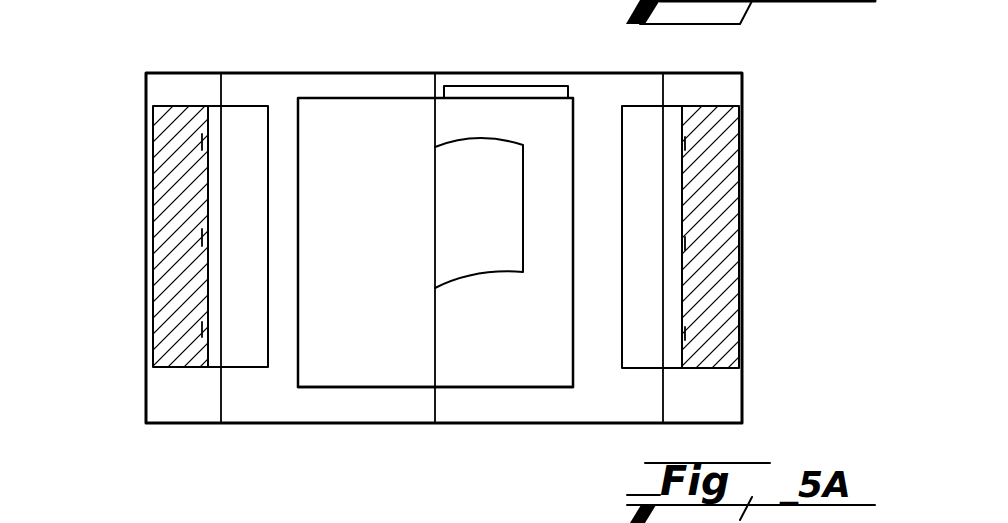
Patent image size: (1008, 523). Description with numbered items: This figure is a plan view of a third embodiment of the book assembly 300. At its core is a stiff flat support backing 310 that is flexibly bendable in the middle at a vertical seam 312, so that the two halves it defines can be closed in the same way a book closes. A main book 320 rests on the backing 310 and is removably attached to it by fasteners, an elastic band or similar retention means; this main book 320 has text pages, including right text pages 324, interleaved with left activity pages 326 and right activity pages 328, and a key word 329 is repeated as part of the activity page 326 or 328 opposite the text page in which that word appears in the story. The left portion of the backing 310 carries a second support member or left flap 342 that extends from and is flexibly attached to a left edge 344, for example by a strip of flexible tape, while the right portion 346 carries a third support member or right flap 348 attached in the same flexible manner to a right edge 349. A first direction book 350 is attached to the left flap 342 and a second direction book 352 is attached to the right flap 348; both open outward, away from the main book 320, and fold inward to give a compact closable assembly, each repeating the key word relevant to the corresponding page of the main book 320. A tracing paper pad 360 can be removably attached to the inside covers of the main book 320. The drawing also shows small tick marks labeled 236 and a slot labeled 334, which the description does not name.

The book assembly 300 is at (328, 62).
The support backing 310 is at (238, 72).
The vertical seam 312 is at (431, 87).
The main book 320 is at (384, 397).
The right text pages 324 is at (508, 178).
The left activity pages 326 is at (336, 378).
The right activity pages 328 is at (553, 374).
The key word 329 is at (378, 302).
The left keyword slot 334 is at (238, 370).
The left flap 342 is at (155, 88).
The left edge 344 is at (223, 405).
The right portion 346 is at (594, 97).
The right flap 348 is at (712, 88).
The right edge 349 is at (664, 408).
The first direction book 350 is at (176, 100).
The second direction book 352 is at (713, 376).
The tracing paper pad 360 is at (500, 86).
The tick mark 236 is at (202, 141).